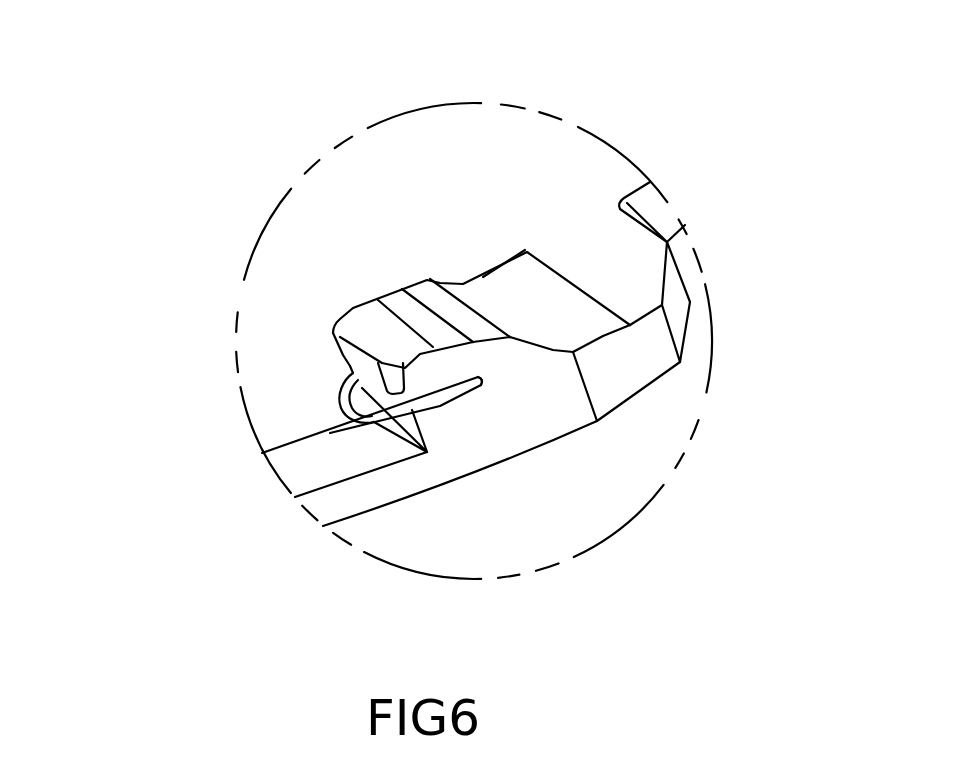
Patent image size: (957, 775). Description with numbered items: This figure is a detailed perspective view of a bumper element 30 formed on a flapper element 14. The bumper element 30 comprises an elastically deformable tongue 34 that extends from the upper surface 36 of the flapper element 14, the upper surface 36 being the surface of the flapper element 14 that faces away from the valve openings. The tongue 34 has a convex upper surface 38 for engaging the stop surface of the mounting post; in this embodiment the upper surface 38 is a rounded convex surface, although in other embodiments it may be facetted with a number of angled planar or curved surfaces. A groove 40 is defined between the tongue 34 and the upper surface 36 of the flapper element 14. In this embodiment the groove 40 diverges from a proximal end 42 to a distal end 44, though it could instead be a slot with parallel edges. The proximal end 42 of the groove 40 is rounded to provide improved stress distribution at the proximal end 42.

The flapper element 14 is at (350, 197).
The bumper element 30 is at (662, 529).
The elastically deformable tongue 34 is at (430, 368).
The upper surface 36 is at (460, 172).
The convex upper surface 38 is at (365, 318).
The groove 40 is at (417, 402).
The proximal end 42 is at (485, 383).
The distal end 44 is at (300, 440).